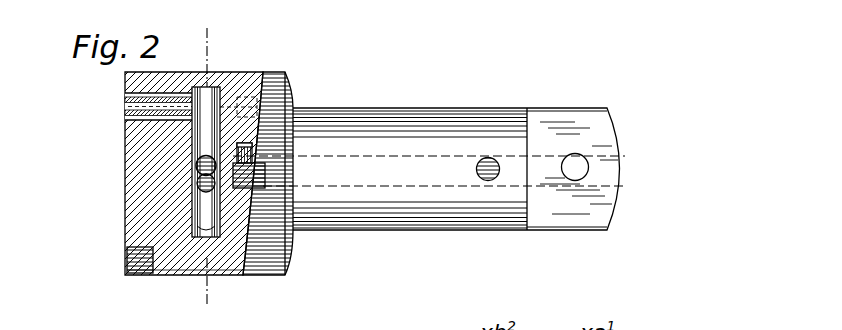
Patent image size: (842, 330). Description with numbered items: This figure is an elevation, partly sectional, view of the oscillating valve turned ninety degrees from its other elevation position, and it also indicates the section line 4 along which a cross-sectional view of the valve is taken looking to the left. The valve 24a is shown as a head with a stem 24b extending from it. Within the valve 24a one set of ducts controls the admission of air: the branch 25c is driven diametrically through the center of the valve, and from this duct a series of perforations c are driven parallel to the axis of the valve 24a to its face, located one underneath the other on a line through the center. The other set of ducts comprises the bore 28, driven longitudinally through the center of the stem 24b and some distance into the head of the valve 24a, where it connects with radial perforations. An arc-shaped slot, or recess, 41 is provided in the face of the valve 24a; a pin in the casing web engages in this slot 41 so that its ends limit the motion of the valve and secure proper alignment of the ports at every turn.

The perforations c is at (127, 114).
The branch 25c is at (196, 199).
The arc-shaped slot 41 is at (126, 258).
The section line 4— 4 is at (246, 55).
The valve 24a is at (276, 277).
The stem 24b is at (493, 232).
The bore 28 is at (338, 152).